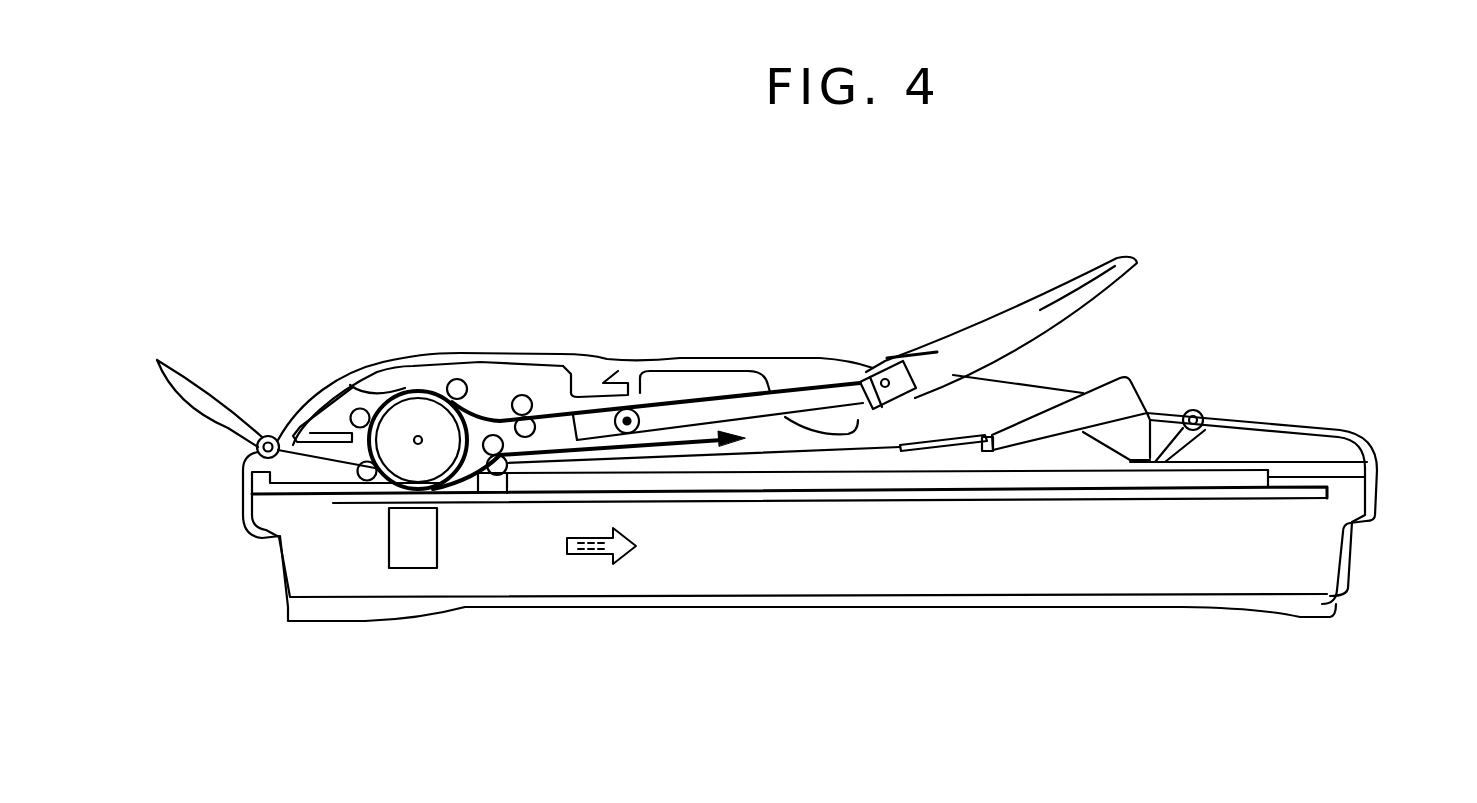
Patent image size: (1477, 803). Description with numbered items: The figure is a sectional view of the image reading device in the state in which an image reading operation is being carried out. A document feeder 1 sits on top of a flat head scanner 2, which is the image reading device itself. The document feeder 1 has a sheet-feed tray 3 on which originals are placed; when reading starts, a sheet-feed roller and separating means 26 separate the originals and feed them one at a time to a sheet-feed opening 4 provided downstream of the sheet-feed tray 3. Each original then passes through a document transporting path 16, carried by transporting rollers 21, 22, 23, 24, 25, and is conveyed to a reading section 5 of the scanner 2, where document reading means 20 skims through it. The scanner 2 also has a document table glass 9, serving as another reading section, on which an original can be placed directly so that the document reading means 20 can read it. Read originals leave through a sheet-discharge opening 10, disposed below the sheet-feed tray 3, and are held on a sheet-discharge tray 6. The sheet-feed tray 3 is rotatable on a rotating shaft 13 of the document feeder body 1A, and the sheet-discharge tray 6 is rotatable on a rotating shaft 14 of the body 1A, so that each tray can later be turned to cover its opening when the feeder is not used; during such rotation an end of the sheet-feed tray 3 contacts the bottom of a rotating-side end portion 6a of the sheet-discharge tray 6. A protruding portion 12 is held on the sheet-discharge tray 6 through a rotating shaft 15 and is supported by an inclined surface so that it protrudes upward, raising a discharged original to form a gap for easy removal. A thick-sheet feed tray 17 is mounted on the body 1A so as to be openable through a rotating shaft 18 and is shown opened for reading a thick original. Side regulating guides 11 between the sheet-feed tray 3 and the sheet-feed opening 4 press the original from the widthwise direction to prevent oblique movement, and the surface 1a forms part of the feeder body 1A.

The document feeder 1 is at (850, 483).
The document feeder body 1A is at (1355, 428).
The upper surface 1a is at (1053, 440).
The flat head scanner 2 is at (1345, 592).
The sheet-feed tray 3 is at (1033, 310).
The sheet-feed opening 4 is at (626, 385).
The reading section 5 is at (403, 472).
The sheet-discharge tray 6 is at (912, 446).
The rotating-side end portion 6a is at (1010, 410).
The document table glass 9 is at (680, 485).
The sheet-discharge opening 10 is at (880, 437).
The side regulating guides 11 is at (735, 371).
The protruding portion 12 is at (1135, 382).
The rotating shaft 13 is at (885, 378).
The rotating shaft 14 is at (1198, 412).
The rotating shaft 15 is at (990, 455).
The document transporting path 16 is at (433, 385).
The thick-sheet feed tray 17 is at (183, 377).
The rotating shaft 18 is at (260, 452).
The document reading means 20 is at (413, 568).
The transporting roller 21 is at (528, 397).
The transporting roller 22 is at (462, 382).
The transporting roller 23 is at (360, 408).
The transporting roller 24 is at (360, 476).
The transporting roller 25 is at (497, 475).
The sheet-feed roller and separating means 26 is at (638, 413).